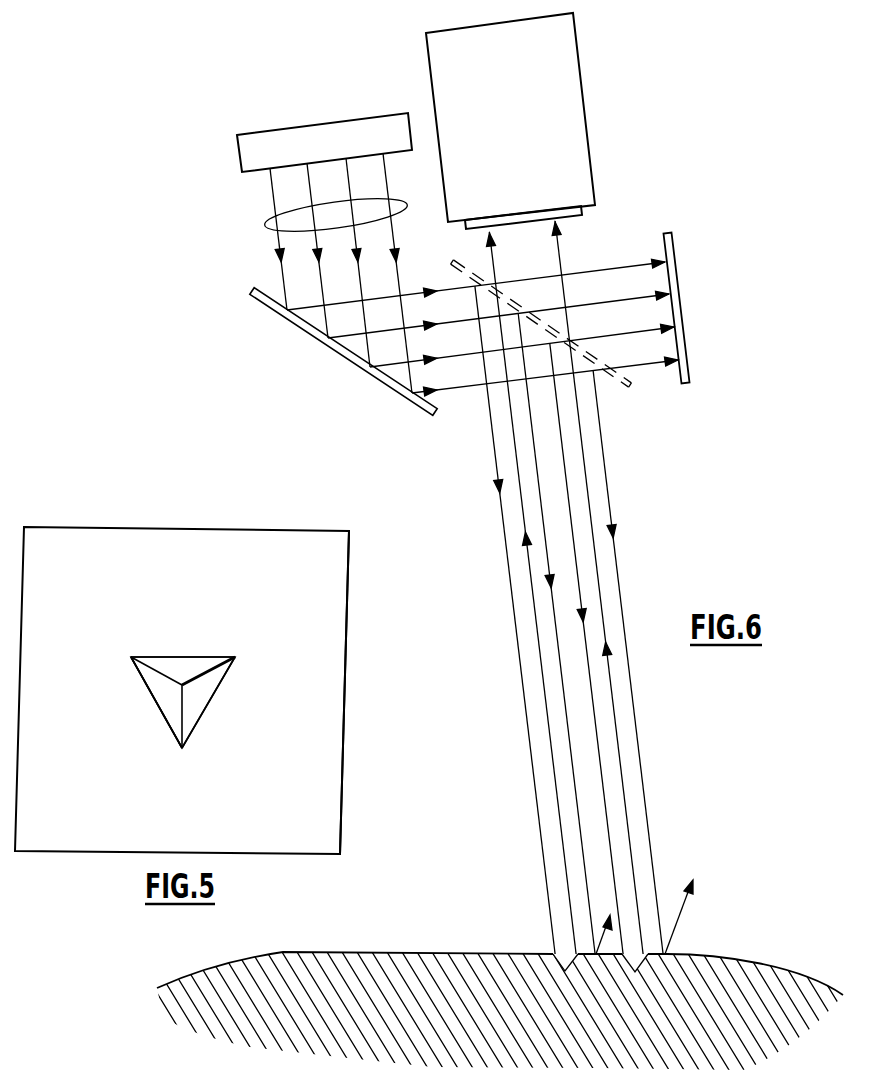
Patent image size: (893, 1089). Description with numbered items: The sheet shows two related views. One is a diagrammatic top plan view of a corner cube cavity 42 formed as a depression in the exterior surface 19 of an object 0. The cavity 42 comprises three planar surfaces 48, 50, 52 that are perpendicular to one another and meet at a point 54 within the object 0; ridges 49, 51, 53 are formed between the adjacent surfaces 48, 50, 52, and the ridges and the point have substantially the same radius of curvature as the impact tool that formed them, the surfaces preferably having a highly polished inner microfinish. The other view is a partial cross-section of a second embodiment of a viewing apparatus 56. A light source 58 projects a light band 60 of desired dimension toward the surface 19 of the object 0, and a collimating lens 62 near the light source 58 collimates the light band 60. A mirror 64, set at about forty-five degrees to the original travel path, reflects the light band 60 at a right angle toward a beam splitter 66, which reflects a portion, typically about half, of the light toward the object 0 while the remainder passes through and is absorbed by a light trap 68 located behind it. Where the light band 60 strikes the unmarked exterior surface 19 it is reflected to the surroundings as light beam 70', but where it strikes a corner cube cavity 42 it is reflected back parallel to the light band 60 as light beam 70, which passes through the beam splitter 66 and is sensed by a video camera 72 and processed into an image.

In FIG. 6, the object 0 is at (420, 950).
In FIG. 5, the object 0 is at (325, 797).
In FIG. 6, the exterior surface 19 is at (757, 962).
In FIG. 5, the exterior surface 19 is at (310, 591).
In FIG. 6, the corner cube cavity 42 is at (652, 953).
In FIG. 5, the corner cube cavity 42 is at (205, 690).
In FIG. 5, the planar surface 48 is at (195, 715).
In FIG. 5, the ridge 49 is at (192, 733).
In FIG. 5, the planar surface 50 is at (160, 715).
In FIG. 5, the ridge 51 is at (150, 677).
In FIG. 5, the planar surface 52 is at (155, 660).
In FIG. 5, the ridge 53 is at (205, 663).
In FIG. 5, the point 54 is at (192, 673).
In FIG. 6, the viewing apparatus 56 is at (458, 433).
In FIG. 6, the light source 58 is at (243, 152).
In FIG. 6, the light band 60 is at (250, 195).
In FIG. 6, the collimating lens 62 is at (268, 227).
In FIG. 6, the mirror 64 is at (303, 330).
In FIG. 6, the beam splitter 66 is at (622, 392).
In FIG. 6, the light trap 68 is at (672, 244).
In FIG. 6, the light beam 70 is at (576, 587).
In FIG. 6, the light beam 70' is at (634, 917).
In FIG. 6, the video camera 72 is at (565, 52).